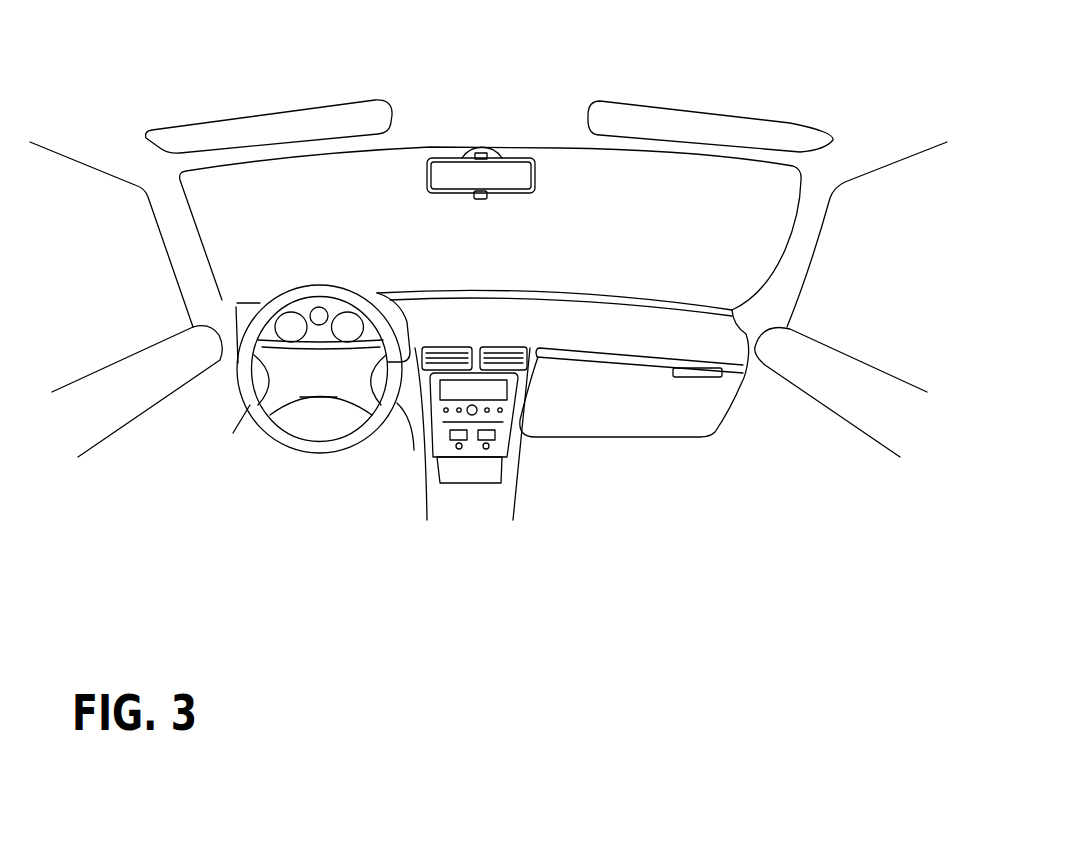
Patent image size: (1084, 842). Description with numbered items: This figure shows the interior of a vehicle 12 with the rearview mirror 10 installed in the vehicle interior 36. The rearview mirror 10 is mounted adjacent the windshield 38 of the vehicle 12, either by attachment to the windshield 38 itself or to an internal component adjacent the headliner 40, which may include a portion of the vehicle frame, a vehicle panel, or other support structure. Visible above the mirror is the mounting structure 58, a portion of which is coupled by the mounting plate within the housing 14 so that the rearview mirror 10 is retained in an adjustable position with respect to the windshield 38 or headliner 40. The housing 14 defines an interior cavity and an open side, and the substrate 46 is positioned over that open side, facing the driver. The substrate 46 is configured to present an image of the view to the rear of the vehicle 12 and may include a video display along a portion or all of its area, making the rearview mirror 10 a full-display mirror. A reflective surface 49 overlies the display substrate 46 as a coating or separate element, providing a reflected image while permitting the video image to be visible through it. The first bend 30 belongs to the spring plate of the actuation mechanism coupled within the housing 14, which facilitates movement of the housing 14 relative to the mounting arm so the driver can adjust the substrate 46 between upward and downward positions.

The rearview mirror 10 is at (491, 171).
The vehicle 12 is at (686, 77).
The housing 14 is at (513, 195).
The first bend 30 is at (480, 198).
The vehicle interior 36 is at (676, 490).
The windshield 38 is at (686, 226).
The headliner 40 is at (434, 124).
The substrate 46 is at (442, 175).
The reflective surface 49 is at (506, 186).
The mounting structure 58 is at (490, 152).